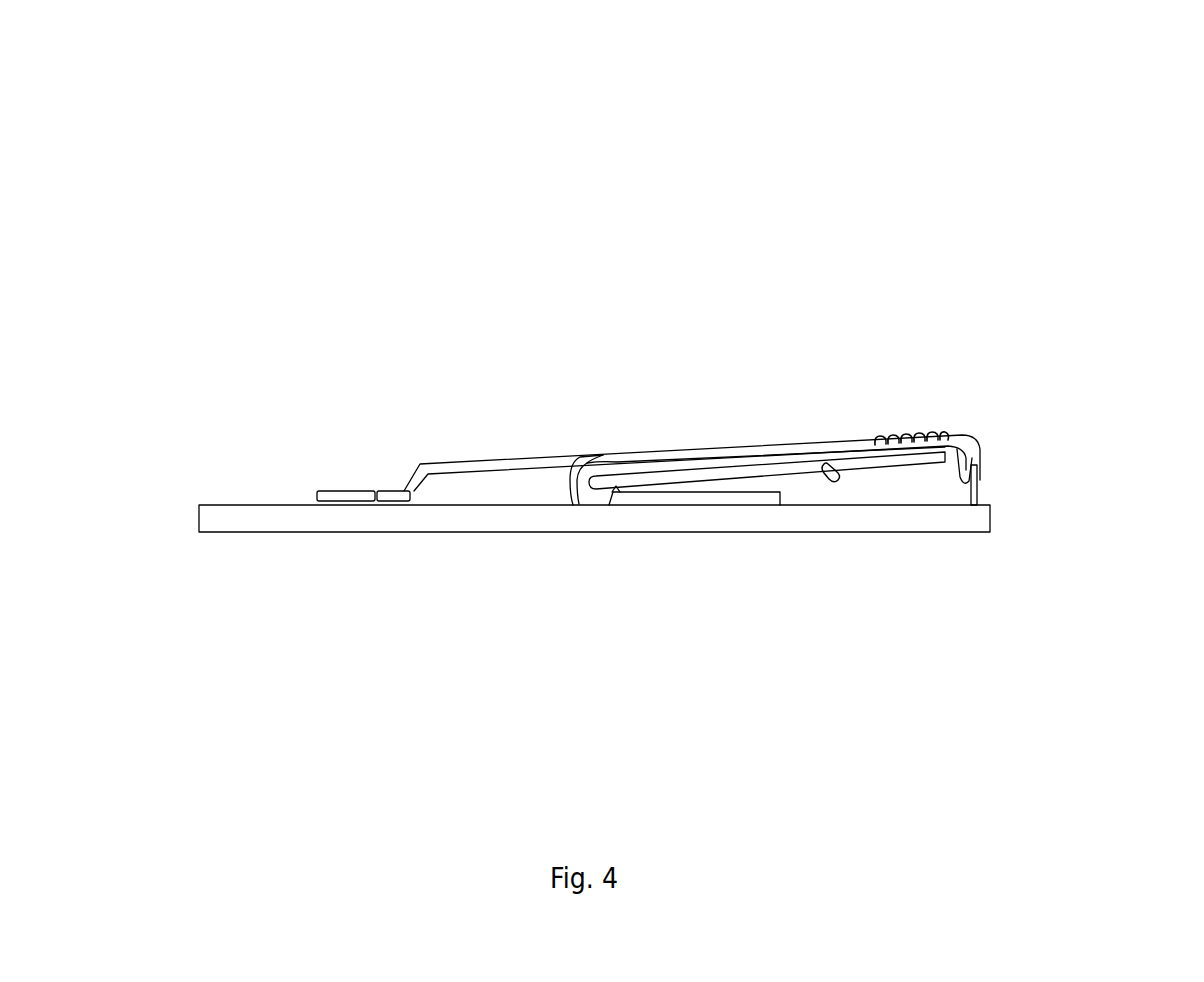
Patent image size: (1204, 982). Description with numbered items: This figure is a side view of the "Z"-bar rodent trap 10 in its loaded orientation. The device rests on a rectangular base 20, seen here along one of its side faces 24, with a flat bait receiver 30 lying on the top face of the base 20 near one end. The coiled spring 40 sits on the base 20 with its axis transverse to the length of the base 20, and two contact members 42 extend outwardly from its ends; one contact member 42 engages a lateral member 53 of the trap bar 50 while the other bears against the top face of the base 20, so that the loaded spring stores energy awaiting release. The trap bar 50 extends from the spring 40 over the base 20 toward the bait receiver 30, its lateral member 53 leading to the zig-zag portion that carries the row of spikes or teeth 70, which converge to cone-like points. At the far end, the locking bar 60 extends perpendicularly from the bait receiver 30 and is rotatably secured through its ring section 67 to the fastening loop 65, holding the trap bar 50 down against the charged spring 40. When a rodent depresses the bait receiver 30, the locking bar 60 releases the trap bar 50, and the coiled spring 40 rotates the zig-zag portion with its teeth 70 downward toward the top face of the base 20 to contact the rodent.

The "Z"-bar rodent trap 10 is at (1037, 134).
The base 20 is at (250, 504).
The side face 24 is at (398, 520).
The bait receiver 30 is at (348, 492).
The coiled spring 40 is at (573, 454).
The contact member 42 is at (829, 470).
The trap bar 50 is at (797, 456).
The lateral member 53 is at (640, 477).
The locking bar 60 is at (711, 445).
The fastening loop 65 is at (985, 490).
The ring section 67 is at (985, 448).
The teeth 70 is at (933, 437).